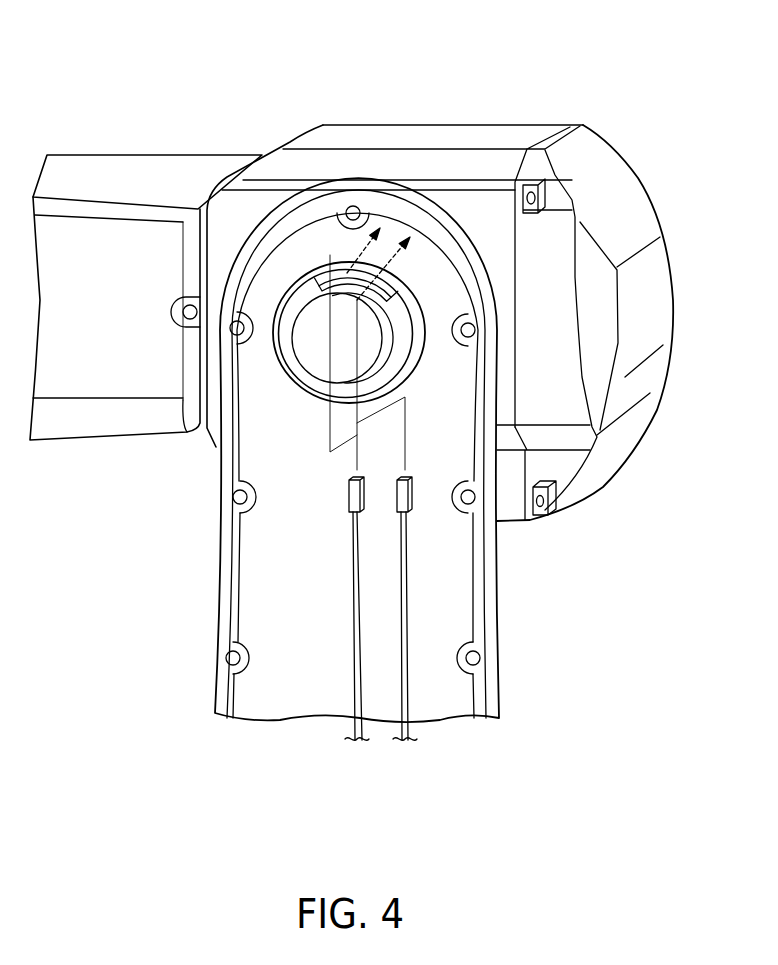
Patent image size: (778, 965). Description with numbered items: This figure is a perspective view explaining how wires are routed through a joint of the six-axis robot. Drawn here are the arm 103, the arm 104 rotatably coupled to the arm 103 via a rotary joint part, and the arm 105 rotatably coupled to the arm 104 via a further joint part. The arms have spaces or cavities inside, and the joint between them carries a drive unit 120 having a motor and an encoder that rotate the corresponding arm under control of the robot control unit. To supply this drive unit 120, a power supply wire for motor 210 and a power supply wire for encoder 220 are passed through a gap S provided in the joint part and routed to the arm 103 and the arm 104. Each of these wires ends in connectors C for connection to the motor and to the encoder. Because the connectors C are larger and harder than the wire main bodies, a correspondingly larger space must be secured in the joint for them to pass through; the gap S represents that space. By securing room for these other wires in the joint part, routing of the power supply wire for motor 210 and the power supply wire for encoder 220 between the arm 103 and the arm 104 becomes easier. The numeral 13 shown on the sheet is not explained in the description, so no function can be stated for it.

The gear unit mounting surface 13 is at (465, 215).
The arm 103 is at (216, 615).
The arm 104 is at (518, 123).
The arm 105 is at (133, 155).
The drive unit 120 is at (298, 388).
The gap S is at (333, 263).
The connector C is at (350, 497).
The power supply wire for motor 210 is at (353, 672).
The power supply wire for encoder 220 is at (413, 678).